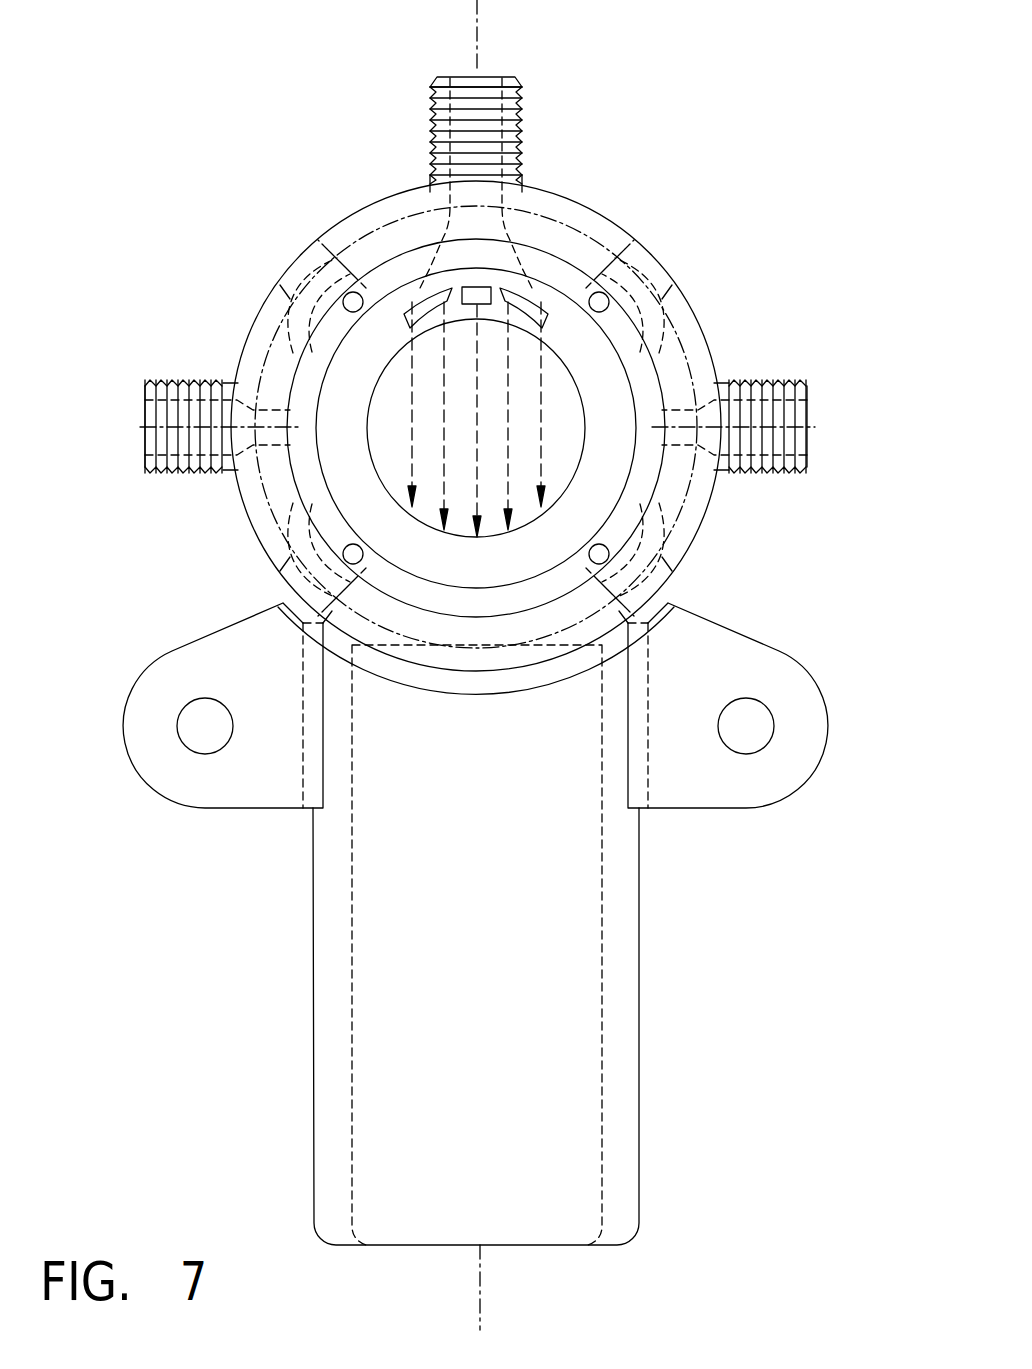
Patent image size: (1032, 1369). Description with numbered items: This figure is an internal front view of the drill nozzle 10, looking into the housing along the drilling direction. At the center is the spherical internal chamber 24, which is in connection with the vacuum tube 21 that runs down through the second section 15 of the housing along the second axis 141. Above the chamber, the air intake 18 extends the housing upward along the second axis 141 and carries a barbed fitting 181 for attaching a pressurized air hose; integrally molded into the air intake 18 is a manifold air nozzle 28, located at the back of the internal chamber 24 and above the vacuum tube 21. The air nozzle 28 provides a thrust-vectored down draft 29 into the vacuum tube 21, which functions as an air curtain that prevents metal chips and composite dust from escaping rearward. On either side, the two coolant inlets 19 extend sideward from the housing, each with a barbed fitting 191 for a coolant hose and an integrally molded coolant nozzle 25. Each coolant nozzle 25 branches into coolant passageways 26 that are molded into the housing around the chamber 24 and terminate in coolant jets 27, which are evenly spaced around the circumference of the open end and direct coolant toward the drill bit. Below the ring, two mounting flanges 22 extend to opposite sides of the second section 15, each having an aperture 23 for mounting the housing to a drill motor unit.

The drill nozzle 10 is at (748, 1097).
The second axis 141 is at (472, 5).
The second section 15 is at (325, 936).
The air intake 18 is at (460, 76).
The barbed fitting 181 is at (522, 102).
The coolant inlets 19 is at (145, 438).
The barbed fitting 191 is at (163, 476).
The vacuum tube 21 is at (598, 1030).
The mounting flanges 22 is at (127, 718).
The aperture 23 is at (196, 745).
The internal chamber 24 is at (397, 433).
The coolant nozzle 25 is at (148, 426).
The coolant passageways 26 is at (277, 289).
The coolant jets 27 is at (358, 312).
The manifold air nozzle 28 is at (493, 78).
The thrust-vectored down draft 29 is at (508, 419).